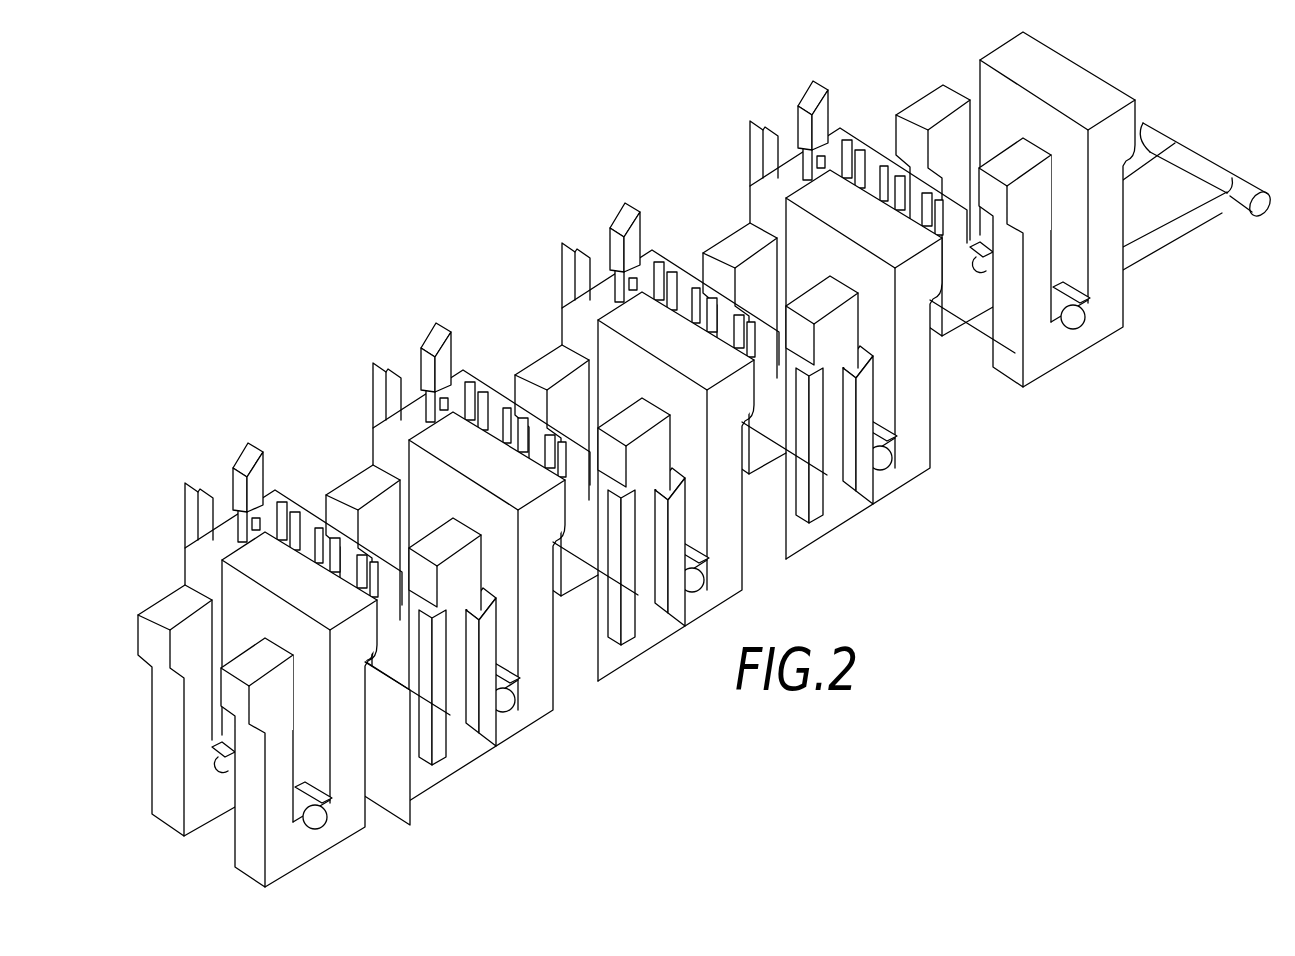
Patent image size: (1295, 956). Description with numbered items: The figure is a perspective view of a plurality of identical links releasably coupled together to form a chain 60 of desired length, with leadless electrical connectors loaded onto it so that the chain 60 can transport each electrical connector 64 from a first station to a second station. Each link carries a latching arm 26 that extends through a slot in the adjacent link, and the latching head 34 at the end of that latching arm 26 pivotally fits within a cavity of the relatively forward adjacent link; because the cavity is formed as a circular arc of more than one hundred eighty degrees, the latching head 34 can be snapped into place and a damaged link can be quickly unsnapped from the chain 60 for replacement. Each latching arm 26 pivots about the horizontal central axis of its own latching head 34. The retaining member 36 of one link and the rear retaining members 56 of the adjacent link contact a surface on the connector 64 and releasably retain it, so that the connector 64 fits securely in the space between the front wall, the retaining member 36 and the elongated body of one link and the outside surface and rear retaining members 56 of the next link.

The latching arm 26 is at (1207, 206).
The latching head 34 is at (1096, 342).
The retaining member 36 is at (684, 486).
The rear retaining members 56 is at (670, 272).
The chain 60 is at (783, 163).
The electrical connector 64 is at (864, 372).